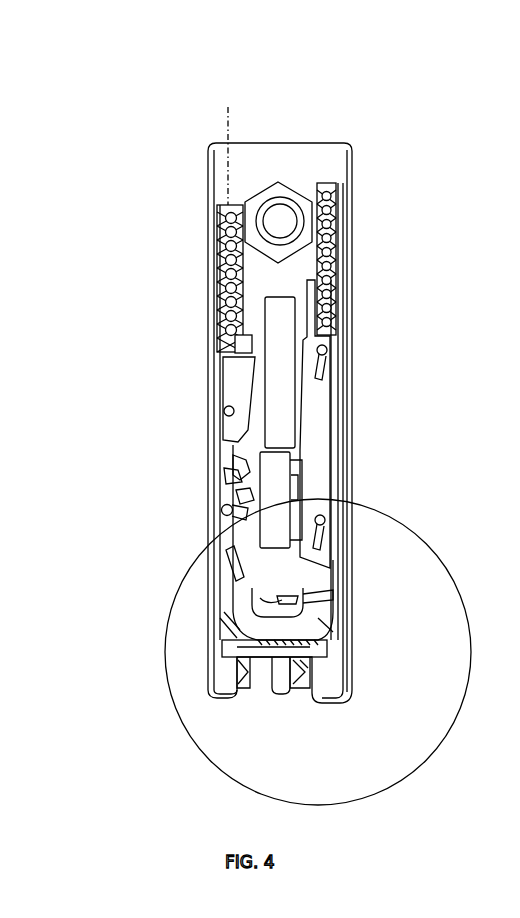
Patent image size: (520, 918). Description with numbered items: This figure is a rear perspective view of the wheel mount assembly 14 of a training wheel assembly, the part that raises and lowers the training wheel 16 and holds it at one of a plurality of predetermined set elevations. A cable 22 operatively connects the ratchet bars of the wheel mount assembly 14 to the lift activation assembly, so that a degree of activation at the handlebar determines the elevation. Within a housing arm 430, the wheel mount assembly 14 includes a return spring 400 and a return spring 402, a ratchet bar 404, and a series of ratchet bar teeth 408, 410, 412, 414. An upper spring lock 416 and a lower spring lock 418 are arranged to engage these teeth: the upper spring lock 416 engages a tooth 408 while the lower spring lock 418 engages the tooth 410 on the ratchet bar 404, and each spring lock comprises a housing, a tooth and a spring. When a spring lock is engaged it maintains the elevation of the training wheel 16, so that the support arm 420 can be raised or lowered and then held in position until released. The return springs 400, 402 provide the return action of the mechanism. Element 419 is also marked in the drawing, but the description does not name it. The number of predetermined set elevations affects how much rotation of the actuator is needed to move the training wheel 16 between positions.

The wheel mount assembly 14 is at (146, 87).
The training wheel 16 is at (470, 684).
The cable 22 is at (228, 143).
The return spring 400 is at (216, 273).
The return spring 402 is at (348, 232).
The ratchet bar 404 is at (207, 373).
The tooth 408 is at (260, 540).
The tooth 410 is at (331, 413).
The tooth 412 is at (243, 465).
The tooth 414 is at (223, 412).
The upper spring lock 416 is at (240, 474).
The lower spring lock 418 is at (232, 508).
The link 419 is at (240, 497).
The support arm 420 is at (235, 547).
The housing arm 430 is at (208, 178).